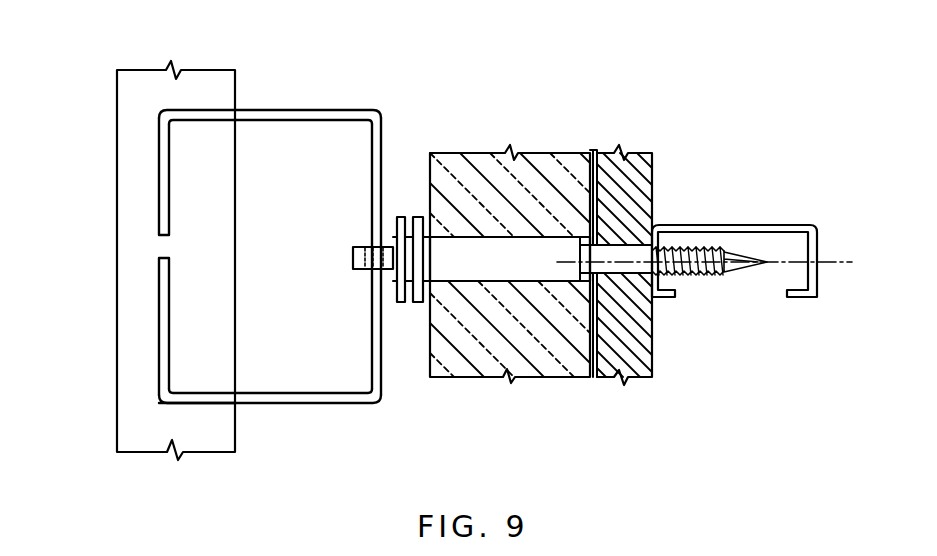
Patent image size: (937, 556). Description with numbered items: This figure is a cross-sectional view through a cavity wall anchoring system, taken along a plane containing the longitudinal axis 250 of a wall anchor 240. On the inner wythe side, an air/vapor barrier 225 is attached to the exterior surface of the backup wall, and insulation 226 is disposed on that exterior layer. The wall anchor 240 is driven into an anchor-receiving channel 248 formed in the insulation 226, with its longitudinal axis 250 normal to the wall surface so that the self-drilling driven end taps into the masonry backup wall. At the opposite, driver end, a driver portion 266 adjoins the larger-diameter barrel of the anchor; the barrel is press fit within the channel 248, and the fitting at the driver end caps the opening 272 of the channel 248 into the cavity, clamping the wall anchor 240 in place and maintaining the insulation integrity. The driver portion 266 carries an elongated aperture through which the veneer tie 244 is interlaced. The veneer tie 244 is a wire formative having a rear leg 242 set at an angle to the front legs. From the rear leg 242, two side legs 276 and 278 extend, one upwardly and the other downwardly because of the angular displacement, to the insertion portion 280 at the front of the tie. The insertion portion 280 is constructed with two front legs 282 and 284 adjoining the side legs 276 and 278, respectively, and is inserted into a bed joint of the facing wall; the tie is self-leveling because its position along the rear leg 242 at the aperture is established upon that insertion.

The air/vapor barrier 225 is at (593, 150).
The insulation 226 is at (565, 338).
The wall anchor 240 is at (474, 240).
The rear leg 242 is at (262, 264).
The veneer tie 244 is at (209, 418).
The anchor-receiving channel 248 is at (522, 283).
The longitudinal axis 250 is at (833, 268).
The driver portion 266 is at (352, 262).
The opening 272 is at (446, 284).
The side leg 276 is at (253, 110).
The side leg 278 is at (268, 400).
The insertion portion 280 is at (155, 207).
The front leg 282 is at (158, 153).
The front leg 284 is at (170, 325).